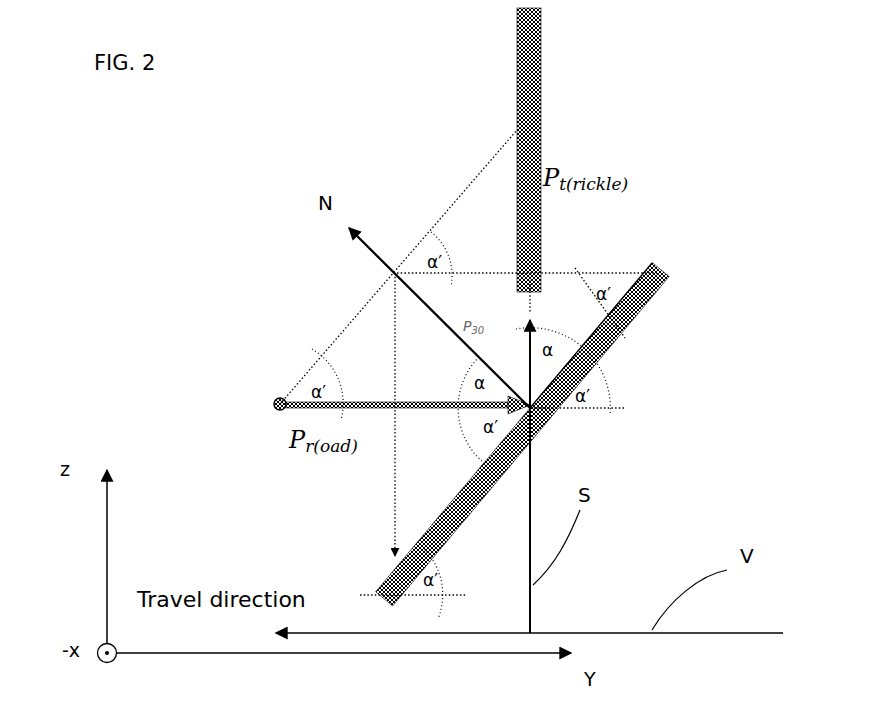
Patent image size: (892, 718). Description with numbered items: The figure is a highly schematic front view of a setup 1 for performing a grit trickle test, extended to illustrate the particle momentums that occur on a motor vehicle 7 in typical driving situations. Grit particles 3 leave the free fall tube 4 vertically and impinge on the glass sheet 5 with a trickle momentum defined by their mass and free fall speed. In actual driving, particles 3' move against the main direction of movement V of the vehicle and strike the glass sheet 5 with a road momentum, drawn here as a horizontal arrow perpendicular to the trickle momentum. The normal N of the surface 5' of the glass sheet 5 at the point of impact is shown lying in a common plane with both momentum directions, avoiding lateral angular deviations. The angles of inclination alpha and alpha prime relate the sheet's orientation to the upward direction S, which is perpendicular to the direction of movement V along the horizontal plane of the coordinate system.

The setup 1 is at (673, 111).
The grit particles 3 is at (610, 409).
The particles 3' is at (364, 373).
The free fall tube 4 is at (538, 148).
The glass sheet 5 is at (551, 416).
The surface 5' is at (591, 358).
The motor vehicle 7 is at (390, 570).